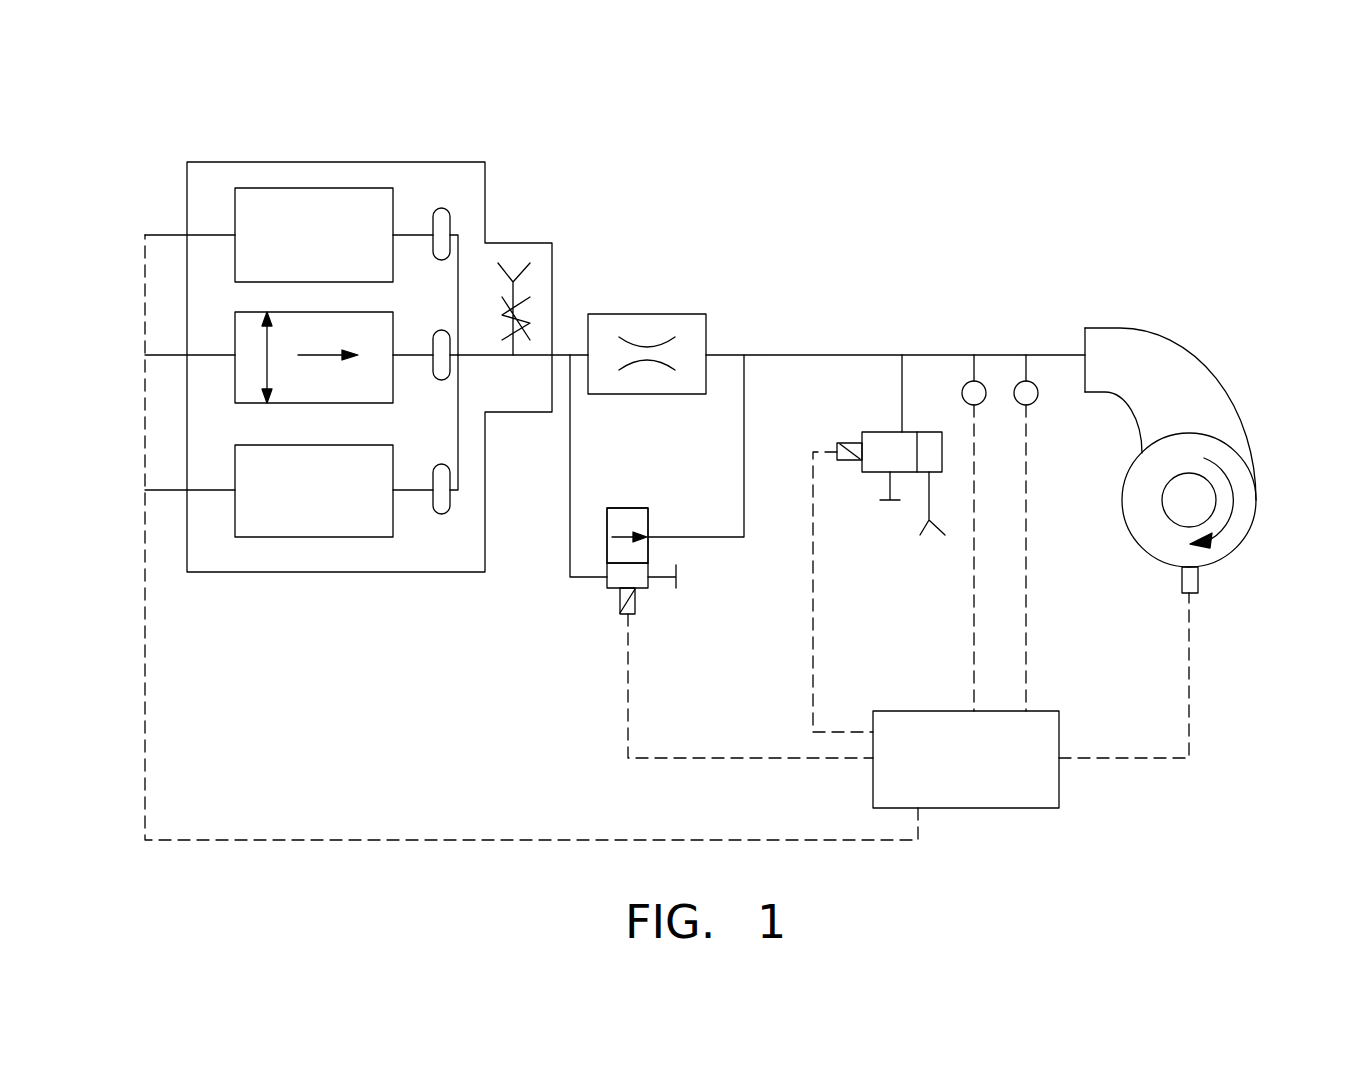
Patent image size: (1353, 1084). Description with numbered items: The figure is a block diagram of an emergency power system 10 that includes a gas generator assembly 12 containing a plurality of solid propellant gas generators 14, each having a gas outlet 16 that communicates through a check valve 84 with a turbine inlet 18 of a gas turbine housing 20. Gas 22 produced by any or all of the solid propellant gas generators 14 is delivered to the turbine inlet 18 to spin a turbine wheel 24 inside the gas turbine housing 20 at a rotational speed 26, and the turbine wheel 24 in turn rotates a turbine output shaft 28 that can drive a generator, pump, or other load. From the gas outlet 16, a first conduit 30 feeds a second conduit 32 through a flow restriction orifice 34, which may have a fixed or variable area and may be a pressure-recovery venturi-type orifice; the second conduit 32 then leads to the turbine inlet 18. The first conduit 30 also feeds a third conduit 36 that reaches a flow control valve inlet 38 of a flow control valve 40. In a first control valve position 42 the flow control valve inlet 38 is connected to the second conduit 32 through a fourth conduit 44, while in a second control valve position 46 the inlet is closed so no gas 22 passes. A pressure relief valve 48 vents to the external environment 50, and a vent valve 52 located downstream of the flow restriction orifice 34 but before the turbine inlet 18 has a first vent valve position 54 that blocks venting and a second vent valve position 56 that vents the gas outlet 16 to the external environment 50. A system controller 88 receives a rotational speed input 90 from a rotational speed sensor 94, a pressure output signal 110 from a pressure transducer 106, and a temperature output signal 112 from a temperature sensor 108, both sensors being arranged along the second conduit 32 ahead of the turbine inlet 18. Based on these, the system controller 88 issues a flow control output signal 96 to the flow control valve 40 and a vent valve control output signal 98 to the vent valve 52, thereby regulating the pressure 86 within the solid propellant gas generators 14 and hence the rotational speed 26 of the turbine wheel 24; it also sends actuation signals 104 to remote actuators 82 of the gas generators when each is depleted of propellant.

The emergency power system 10 is at (692, 152).
The gas generator assembly 12 is at (338, 162).
The solid propellant gas generators 14 is at (395, 210).
The gas outlet 16 is at (395, 240).
The turbine inlet 18 is at (1084, 345).
The gas turbine housing 20 is at (1152, 333).
The gas 22 is at (318, 355).
The turbine wheel 24 is at (1235, 450).
The rotational speed 26 is at (1218, 532).
The turbine output shaft 28 is at (1178, 510).
The first conduit 30 is at (487, 358).
The second conduit 32 is at (782, 354).
The flow restriction orifice 34 is at (619, 314).
The third conduit 36 is at (570, 460).
The flow control valve inlet 38 is at (607, 580).
The flow control valve 40 is at (630, 508).
The first control valve position 42 is at (616, 533).
The fourth conduit 44 is at (746, 450).
The second control valve position 46 is at (680, 582).
The pressure relief valve 48 is at (521, 302).
The external environment 50 is at (709, 680).
The vent valve 52 is at (888, 432).
The first vent valve position 54 is at (887, 503).
The second vent valve position 56 is at (917, 530).
The remote actuators 82 is at (175, 235).
The check valve 84 is at (449, 216).
The pressure 86 is at (268, 362).
The system controller 88 is at (966, 808).
The rotational speed input 90 is at (1110, 758).
The rotational speed sensor 94 is at (1199, 586).
The flow control output signal 96 is at (700, 758).
The vent valve control output signal 98 is at (815, 632).
The actuation signals 104 is at (308, 840).
The pressure transducer 106 is at (1034, 405).
The temperature sensor 108 is at (965, 385).
The pressure output signal 110 is at (1027, 608).
The temperature output signal 112 is at (973, 680).